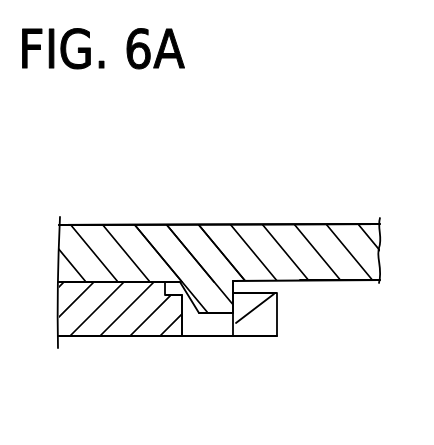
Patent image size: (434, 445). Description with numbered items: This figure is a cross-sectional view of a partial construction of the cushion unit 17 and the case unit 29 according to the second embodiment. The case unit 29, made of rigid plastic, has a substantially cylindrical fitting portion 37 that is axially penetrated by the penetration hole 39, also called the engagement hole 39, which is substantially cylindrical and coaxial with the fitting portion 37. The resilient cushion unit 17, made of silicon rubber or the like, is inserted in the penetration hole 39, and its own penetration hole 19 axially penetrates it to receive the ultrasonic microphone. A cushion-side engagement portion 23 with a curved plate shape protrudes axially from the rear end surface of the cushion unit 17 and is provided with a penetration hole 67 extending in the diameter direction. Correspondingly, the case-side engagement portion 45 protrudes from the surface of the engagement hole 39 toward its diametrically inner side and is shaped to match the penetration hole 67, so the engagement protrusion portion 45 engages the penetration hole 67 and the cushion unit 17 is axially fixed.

The cushion unit 17 is at (147, 340).
The penetration hole 19 is at (85, 337).
The cushion-side engagement portion 23 is at (258, 318).
The case unit 29 is at (335, 217).
The fitting portion 37 is at (128, 243).
The penetration hole 39 is at (328, 282).
The case-side engagement portion 45 is at (211, 289).
The penetration hole 67 is at (217, 328).